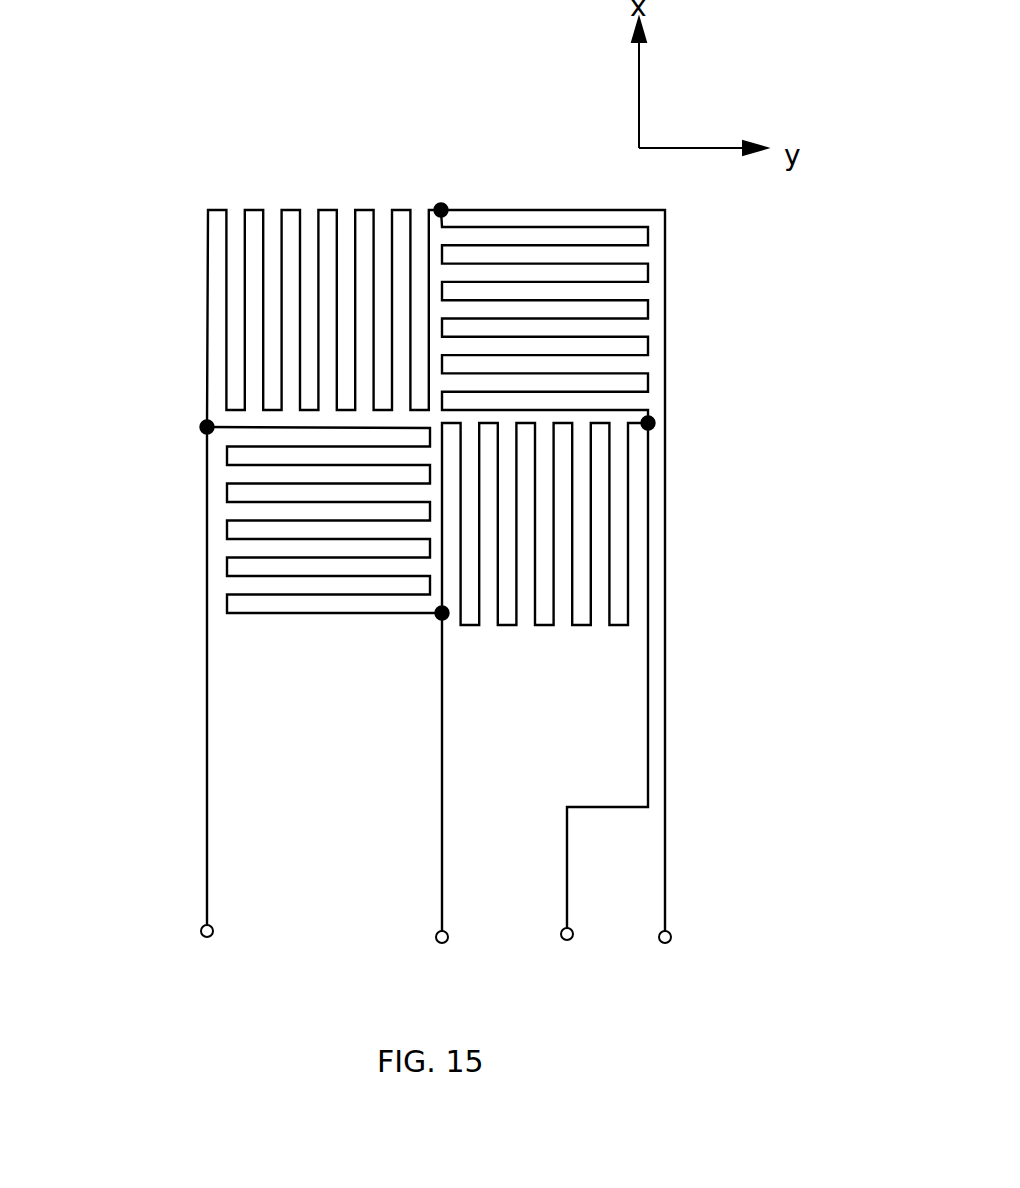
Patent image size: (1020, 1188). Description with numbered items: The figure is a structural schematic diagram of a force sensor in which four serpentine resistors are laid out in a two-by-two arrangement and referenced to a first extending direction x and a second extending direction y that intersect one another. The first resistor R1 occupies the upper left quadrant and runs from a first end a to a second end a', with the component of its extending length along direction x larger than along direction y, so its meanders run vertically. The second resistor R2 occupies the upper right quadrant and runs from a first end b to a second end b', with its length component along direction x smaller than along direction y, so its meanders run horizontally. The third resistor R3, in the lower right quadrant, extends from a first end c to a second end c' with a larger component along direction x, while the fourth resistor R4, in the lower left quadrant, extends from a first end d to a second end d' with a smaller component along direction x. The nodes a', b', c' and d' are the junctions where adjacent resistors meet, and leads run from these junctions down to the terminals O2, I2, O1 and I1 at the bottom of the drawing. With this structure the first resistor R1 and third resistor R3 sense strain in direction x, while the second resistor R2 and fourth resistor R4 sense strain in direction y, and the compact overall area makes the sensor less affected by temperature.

The first resistor R1 is at (403, 195).
The second resistor R2 is at (635, 195).
The third resistor R3 is at (622, 627).
The fourth resistor R4 is at (405, 627).
The second end of the first resistor a' is at (476, 139).
The second end of the second resistor b' is at (703, 343).
The second end of the third resistor c' is at (382, 696).
The second end of the fourth resistor d' is at (143, 396).
The output terminal O1 is at (601, 703).
The output terminal O2 is at (197, 704).
The input terminal I1 is at (563, 597).
The input terminal I2 is at (449, 799).